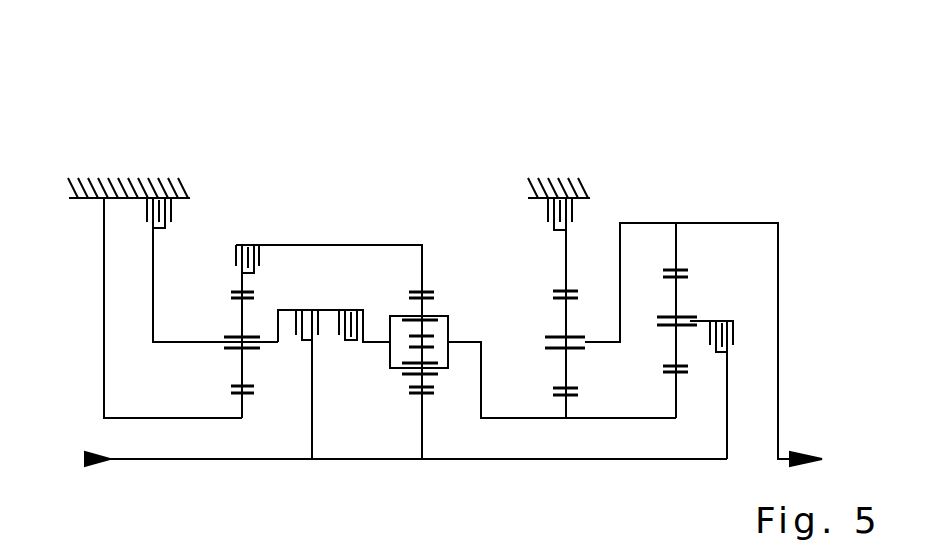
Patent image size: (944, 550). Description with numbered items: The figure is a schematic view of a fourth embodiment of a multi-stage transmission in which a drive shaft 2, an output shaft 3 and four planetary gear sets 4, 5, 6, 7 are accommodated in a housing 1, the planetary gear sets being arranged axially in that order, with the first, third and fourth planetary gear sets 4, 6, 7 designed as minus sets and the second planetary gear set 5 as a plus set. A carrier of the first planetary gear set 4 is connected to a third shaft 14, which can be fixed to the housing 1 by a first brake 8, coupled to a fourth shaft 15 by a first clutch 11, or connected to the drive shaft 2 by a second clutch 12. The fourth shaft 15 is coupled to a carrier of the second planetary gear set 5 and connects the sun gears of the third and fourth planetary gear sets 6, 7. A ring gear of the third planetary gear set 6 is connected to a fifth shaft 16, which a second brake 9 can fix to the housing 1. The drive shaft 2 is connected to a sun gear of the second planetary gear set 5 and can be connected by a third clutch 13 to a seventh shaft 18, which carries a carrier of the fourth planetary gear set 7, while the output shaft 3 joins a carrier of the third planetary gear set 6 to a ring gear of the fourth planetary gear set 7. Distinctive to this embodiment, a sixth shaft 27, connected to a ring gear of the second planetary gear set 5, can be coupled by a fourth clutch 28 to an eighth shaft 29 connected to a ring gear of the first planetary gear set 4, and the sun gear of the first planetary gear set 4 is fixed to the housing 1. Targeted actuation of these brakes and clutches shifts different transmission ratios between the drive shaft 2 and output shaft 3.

The housing 1 is at (152, 196).
The drive shaft 2 is at (207, 459).
The output shaft 3 is at (778, 307).
The first planetary gear set 4 is at (245, 160).
The second planetary gear set 5 is at (423, 160).
The third planetary gear set 6 is at (567, 160).
The fourth planetary gear set 7 is at (677, 160).
The first brake 8 is at (148, 197).
The second brake 9 is at (558, 215).
The first clutch 11 is at (347, 342).
The second clutch 12 is at (302, 342).
The third clutch 13 is at (720, 352).
The third shaft 14 is at (153, 303).
The fourth shaft 15 is at (577, 420).
The fifth shaft 16 is at (565, 262).
The seventh shaft 18 is at (698, 323).
The sixth shaft 27 is at (350, 245).
The fourth clutch 28 is at (249, 250).
The eighth shaft 29 is at (240, 282).